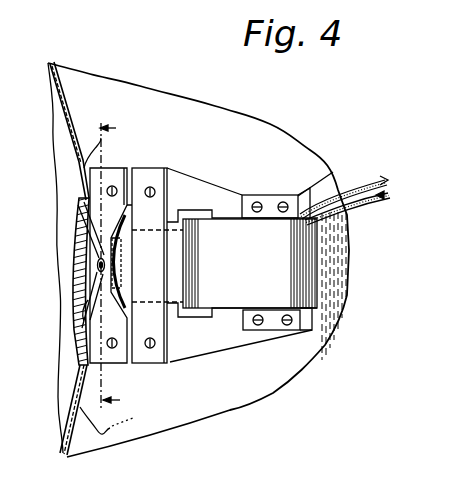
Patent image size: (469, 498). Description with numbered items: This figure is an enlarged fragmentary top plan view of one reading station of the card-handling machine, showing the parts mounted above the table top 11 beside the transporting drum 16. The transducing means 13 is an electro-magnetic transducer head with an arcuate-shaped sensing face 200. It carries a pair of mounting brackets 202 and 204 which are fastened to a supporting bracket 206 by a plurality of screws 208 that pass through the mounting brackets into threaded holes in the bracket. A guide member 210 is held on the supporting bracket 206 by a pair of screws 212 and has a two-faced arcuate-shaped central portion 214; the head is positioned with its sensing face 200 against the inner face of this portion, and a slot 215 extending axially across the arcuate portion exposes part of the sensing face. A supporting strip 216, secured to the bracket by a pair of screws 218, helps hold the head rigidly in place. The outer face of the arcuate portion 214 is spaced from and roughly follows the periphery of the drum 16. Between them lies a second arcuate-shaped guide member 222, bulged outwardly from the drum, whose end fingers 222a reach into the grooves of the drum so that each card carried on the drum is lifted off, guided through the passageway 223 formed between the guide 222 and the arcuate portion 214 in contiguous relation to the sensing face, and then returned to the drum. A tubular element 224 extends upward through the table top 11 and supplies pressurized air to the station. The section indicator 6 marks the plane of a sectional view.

The table top 11 is at (327, 280).
The transporting drum 16 is at (62, 152).
The transducing means 13 is at (178, 288).
The section line 6 is at (116, 265).
The sensing face 200 is at (118, 295).
The mounting bracket 202 is at (270, 200).
The mounting bracket 204 is at (288, 326).
The supporting bracket 206 is at (205, 186).
The screws 208 is at (257, 202).
The guide member 210 is at (104, 172).
The screws 212 is at (117, 186).
The arcuate-shaped central portion 214 is at (85, 310).
The slot 215 is at (122, 258).
The supporting strip 216 is at (135, 170).
The screws 218 is at (153, 189).
The second arcuate-shaped guide member 222 is at (80, 244).
The finger 222a is at (80, 200).
The passageway 223 is at (92, 318).
The tubular element 224 is at (94, 268).